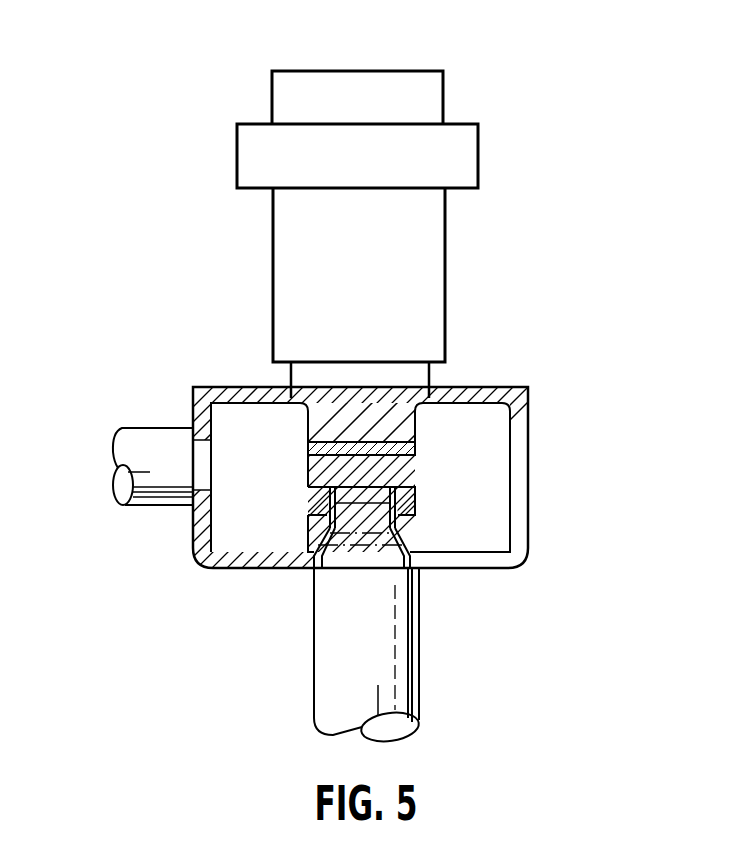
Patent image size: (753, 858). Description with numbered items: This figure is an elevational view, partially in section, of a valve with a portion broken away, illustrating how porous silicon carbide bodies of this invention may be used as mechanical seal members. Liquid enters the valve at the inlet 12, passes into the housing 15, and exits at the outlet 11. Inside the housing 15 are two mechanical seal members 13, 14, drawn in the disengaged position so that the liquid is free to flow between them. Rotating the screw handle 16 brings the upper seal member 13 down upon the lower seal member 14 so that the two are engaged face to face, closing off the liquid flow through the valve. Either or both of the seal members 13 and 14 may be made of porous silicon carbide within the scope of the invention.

The valve exit 11 is at (102, 503).
The valve inlet 12 is at (331, 739).
The mechanical seal member 13 is at (308, 455).
The mechanical seal member 14 is at (415, 487).
The housing 15 is at (529, 484).
The screw handle 16 is at (477, 113).